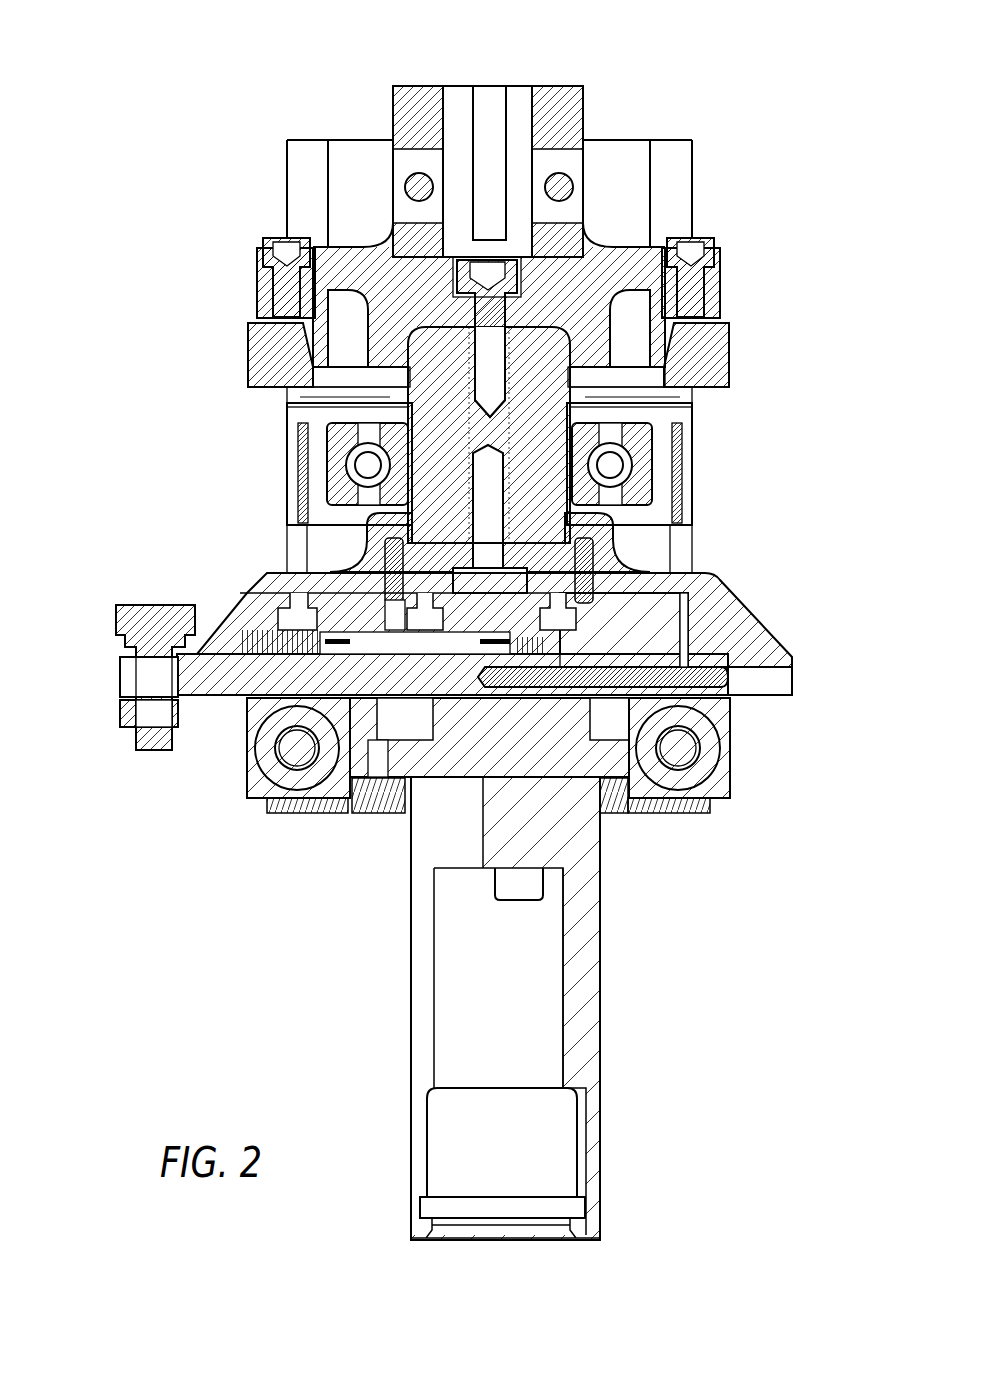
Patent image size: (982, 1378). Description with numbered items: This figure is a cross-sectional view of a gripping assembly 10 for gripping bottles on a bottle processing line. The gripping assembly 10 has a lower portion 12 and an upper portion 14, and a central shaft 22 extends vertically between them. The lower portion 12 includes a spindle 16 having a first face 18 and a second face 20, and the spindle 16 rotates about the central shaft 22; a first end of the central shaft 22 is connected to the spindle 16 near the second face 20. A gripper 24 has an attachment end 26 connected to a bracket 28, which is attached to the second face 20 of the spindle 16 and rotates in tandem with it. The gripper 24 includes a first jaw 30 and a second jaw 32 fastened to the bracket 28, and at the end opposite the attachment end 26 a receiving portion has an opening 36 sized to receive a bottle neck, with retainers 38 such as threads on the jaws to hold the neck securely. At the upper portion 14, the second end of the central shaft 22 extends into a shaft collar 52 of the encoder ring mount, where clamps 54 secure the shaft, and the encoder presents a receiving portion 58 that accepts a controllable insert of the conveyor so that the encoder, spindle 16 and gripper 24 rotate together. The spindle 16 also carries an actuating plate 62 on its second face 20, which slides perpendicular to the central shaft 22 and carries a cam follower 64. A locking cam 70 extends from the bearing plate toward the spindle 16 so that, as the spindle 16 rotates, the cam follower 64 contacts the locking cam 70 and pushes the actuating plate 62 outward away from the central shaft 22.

The gripping assembly 10 is at (160, 122).
The first or lower portion 12 is at (497, 997).
The second or upper portion 14 is at (153, 343).
The spindle 16 is at (765, 605).
The first face 18 is at (698, 560).
The second face 20 is at (760, 715).
The central shaft 22 is at (558, 325).
The gripper 24 is at (450, 1164).
The attachment end 26 is at (400, 825).
The bracket 28 is at (678, 835).
The first jaw 30 is at (405, 1035).
The second jaw 32 is at (607, 1020).
The opening 36 is at (465, 1243).
The retainers 38 is at (510, 1086).
The shaft collar 52 is at (532, 143).
The clamps 54 is at (590, 190).
The receiving portion 58 is at (503, 78).
The actuating plate 62 is at (218, 700).
The cam follower 64 is at (108, 624).
The locking cam 70 is at (302, 550).